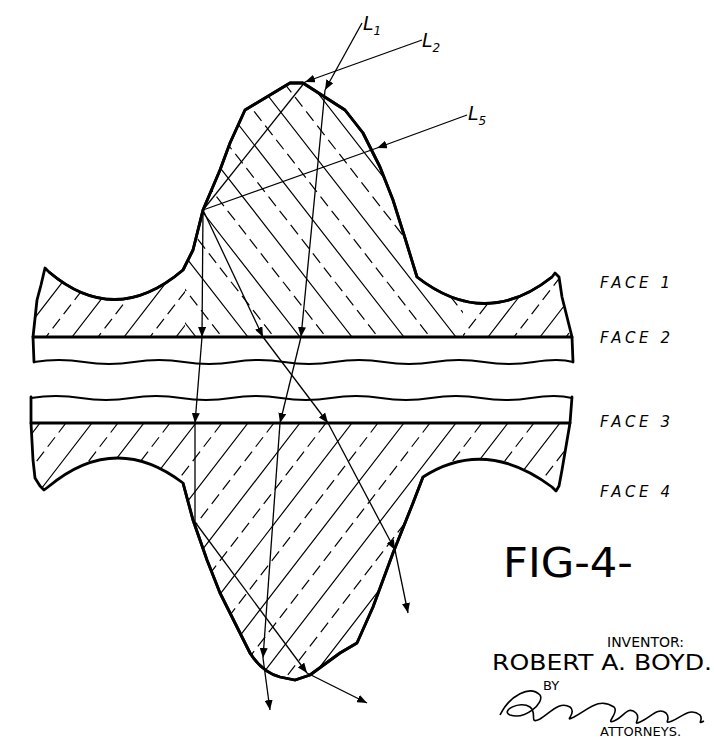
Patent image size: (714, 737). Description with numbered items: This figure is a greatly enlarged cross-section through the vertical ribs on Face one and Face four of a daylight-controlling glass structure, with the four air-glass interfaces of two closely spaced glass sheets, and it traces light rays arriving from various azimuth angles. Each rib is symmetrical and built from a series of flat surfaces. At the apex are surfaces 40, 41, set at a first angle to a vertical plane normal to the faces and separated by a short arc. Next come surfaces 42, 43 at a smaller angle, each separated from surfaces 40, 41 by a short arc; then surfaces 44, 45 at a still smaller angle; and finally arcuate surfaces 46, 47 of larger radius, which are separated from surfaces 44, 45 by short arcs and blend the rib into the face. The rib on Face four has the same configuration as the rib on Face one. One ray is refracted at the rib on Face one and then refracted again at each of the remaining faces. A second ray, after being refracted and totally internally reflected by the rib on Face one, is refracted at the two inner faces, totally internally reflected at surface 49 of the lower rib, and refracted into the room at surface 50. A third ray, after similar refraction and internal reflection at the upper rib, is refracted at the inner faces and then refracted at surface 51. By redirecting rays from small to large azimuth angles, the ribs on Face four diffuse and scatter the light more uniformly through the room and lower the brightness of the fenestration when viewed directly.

The apex surface 40 is at (267, 98).
The apex surface 41 is at (337, 100).
The second flat surface 42 is at (230, 143).
The second flat surface 43 is at (363, 132).
The third flat surface 44 is at (193, 243).
The third flat surface 45 is at (393, 200).
The arcuate surface 46 is at (150, 293).
The arcuate surface 47 is at (481, 302).
The surface 49 is at (203, 547).
The surface 50 is at (340, 653).
The surface 51 is at (397, 548).